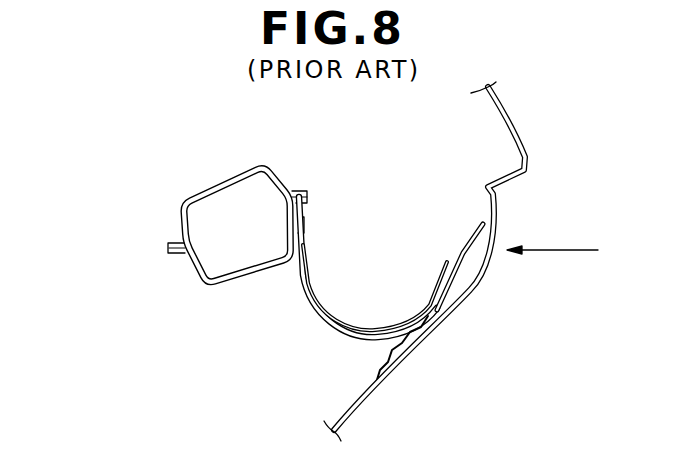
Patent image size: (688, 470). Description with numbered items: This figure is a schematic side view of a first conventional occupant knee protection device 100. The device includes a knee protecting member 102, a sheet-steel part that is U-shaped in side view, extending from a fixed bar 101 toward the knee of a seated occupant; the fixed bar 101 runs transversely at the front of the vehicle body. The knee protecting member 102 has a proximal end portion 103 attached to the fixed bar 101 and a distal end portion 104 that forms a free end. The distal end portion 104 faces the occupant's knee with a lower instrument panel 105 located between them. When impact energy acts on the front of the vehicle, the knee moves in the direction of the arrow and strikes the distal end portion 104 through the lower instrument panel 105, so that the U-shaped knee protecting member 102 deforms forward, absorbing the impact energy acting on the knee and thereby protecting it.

The knee protection device 100 is at (93, 160).
The fixed bar 101 is at (217, 183).
The knee protecting member 102 is at (318, 322).
The proximal end portion 103 is at (306, 222).
The distal end portion 104 is at (470, 232).
The lower instrument panel 105 is at (477, 297).